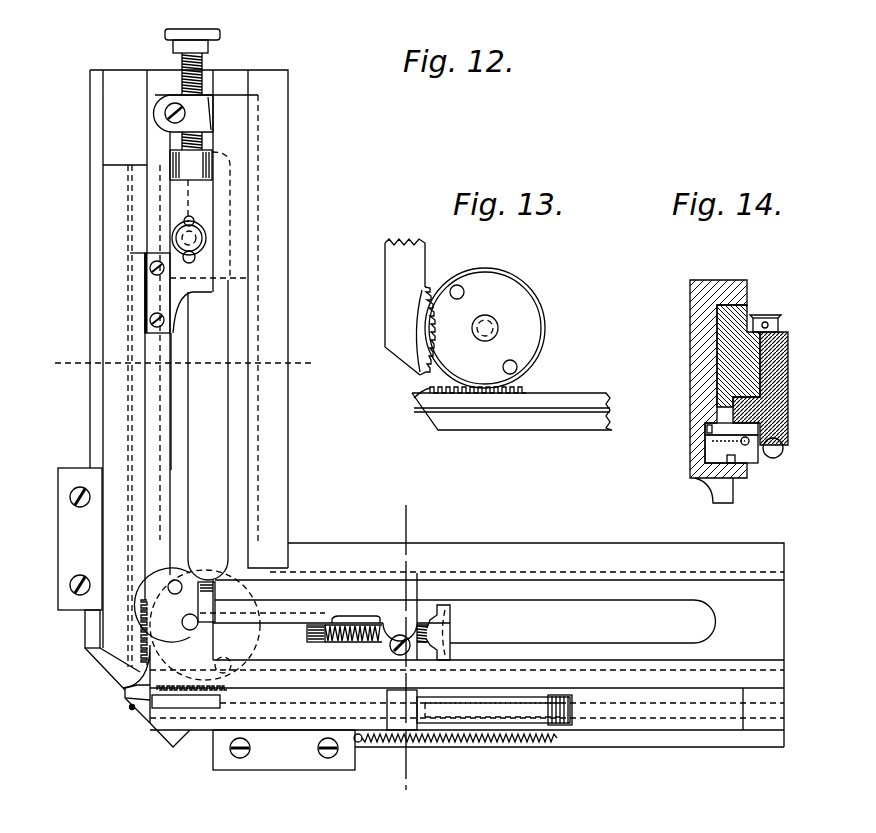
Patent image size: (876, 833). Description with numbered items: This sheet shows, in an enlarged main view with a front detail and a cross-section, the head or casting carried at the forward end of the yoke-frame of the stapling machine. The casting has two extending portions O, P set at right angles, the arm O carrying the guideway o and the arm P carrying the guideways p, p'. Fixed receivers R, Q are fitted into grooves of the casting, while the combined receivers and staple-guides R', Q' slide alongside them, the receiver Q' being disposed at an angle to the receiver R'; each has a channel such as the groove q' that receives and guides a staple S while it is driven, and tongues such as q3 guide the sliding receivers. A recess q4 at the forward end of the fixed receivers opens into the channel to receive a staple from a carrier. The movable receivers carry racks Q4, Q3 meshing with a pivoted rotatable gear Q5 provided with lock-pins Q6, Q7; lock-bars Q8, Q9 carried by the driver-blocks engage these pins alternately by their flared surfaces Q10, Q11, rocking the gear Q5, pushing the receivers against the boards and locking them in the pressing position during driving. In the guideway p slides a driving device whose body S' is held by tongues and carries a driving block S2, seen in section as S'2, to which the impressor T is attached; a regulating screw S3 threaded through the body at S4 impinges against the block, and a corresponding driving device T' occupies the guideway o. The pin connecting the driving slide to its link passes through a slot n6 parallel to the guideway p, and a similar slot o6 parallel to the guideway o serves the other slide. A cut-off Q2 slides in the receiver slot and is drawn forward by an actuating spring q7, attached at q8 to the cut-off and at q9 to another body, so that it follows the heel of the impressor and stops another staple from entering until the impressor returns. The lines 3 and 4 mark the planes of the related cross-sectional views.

In FIG. 12, the extending portion of casting O is at (278, 137).
In FIG. 12, the guideway o is at (225, 82).
In FIG. 12, the fixed receiver R is at (95, 279).
In FIG. 12, the clamp screw block T' is at (216, 181).
In FIG. 12, the section line 3- 3 is at (173, 370).
In FIG. 12, the slot o6 is at (208, 430).
In FIG. 12, the lock-bar Q9 is at (165, 487).
In FIG. 12, the flared surface Q11 is at (175, 537).
In FIG. 12, the fixed receiver Q is at (405, 679).
In FIG. 12, the lock-pin Q6 is at (180, 580).
In FIG. 13, the lock-pin Q6 is at (473, 293).
In FIG. 12, the rotatable gear Q5 is at (169, 627).
In FIG. 13, the rotatable gear Q5 is at (485, 328).
In FIG. 12, the lock-pin Q7 is at (232, 650).
In FIG. 13, the lock-pin Q7 is at (515, 353).
In FIG. 12, the combined receiver and staple-guide R' is at (86, 539).
In FIG. 13, the combined receiver and staple-guide R' is at (385, 307).
In FIG. 12, the lock-bar Q8 is at (140, 628).
In FIG. 12, the flared surface Q10 is at (147, 688).
In FIG. 12, the receiver channel q' is at (168, 721).
In FIG. 13, the receiver channel q' is at (409, 420).
In FIG. 14, the receiver channel q' is at (699, 462).
In FIG. 12, the combined receiver and staple-guide Q' is at (467, 746).
In FIG. 13, the combined receiver and staple-guide Q' is at (512, 433).
In FIG. 14, the combined receiver and staple-guide Q' is at (760, 482).
In FIG. 12, the extending portion of casting P is at (467, 645).
In FIG. 14, the extending portion of casting P is at (700, 302).
In FIG. 12, the guideway p is at (792, 604).
In FIG. 12, the guideway p' is at (794, 714).
In FIG. 12, the slot n6 is at (614, 621).
In FIG. 12, the driving block S2 is at (261, 618).
In FIG. 12, the body of driving device S' is at (325, 606).
In FIG. 14, the body of driving device S' is at (740, 356).
In FIG. 12, the regulating-screw S3 is at (357, 633).
In FIG. 12, the staple S is at (415, 606).
In FIG. 12, the threaded portion S4 is at (430, 628).
In FIG. 12, the section line 4- 4 is at (401, 646).
In FIG. 12, the spring attachment point q9 is at (360, 743).
In FIG. 12, the cut-off Q2 is at (518, 710).
In FIG. 12, the recess q4 is at (457, 745).
In FIG. 12, the actuating-spring q7 is at (523, 745).
In FIG. 12, the spring attachment point q8 is at (568, 740).
In FIG. 12, the tongue q3 is at (284, 750).
In FIG. 14, the tongue q3 is at (735, 465).
In FIG. 13, the rack Q4 is at (418, 335).
In FIG. 13, the rack Q3 is at (462, 398).
In FIG. 14, the rack Q3 is at (705, 428).
In FIG. 14, the driving block S'2 is at (779, 388).
In FIG. 14, the impressor T is at (790, 462).